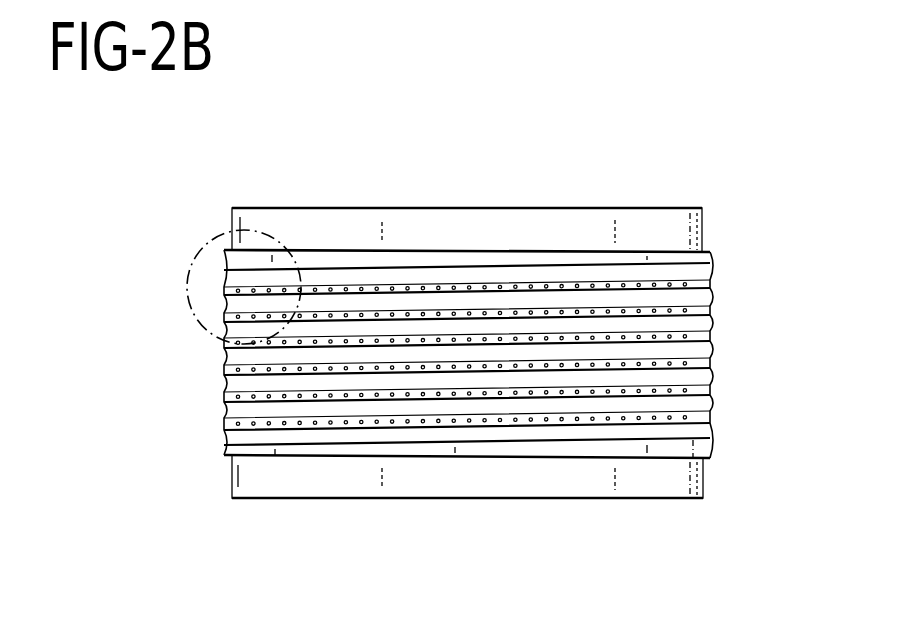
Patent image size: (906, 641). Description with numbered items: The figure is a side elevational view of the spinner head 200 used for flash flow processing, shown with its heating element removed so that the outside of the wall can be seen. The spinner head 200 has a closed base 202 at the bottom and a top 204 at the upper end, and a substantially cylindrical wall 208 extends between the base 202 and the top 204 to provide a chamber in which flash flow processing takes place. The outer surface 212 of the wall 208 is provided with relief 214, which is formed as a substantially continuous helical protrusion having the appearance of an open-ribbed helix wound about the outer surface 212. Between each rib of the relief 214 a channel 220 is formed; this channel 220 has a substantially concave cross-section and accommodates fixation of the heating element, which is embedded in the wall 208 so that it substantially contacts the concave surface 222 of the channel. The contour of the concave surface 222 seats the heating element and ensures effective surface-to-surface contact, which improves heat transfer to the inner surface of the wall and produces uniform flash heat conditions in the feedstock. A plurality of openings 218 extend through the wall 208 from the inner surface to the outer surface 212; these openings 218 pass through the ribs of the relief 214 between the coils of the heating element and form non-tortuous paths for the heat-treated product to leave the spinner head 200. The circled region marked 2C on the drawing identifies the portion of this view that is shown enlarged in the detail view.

The spinner head 200 is at (680, 108).
The closed base 202 is at (677, 483).
The top 204 is at (441, 224).
The substantially cylindrical wall 208 is at (735, 251).
The outer surface 212 is at (706, 253).
The relief 214 is at (225, 373).
The openings 218 is at (467, 417).
The channel 220 is at (225, 437).
The concave surface 222 is at (248, 437).
The detail view circle 2C is at (198, 208).